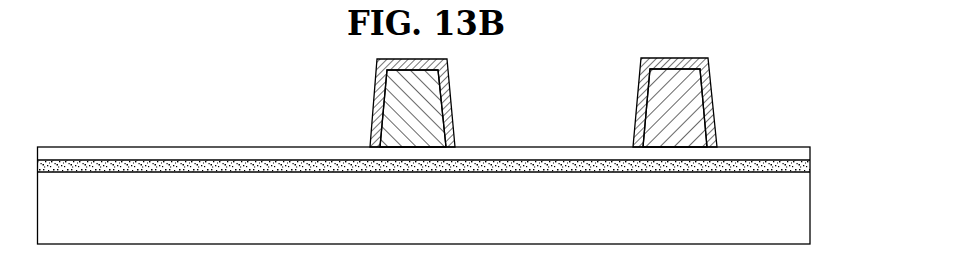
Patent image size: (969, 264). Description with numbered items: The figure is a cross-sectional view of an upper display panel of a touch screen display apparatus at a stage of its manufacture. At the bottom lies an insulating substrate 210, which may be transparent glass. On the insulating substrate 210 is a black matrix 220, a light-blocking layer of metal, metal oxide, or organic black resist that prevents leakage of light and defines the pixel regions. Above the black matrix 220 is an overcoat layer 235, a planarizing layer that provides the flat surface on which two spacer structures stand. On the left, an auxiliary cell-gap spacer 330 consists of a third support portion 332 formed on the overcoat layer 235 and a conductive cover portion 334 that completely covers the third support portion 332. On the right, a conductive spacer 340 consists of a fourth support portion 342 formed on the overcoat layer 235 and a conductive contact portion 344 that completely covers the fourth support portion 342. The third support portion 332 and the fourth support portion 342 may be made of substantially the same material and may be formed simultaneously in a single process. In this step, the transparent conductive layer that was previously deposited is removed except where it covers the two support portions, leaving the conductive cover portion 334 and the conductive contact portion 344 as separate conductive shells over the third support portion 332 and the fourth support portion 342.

The insulating substrate 210 is at (798, 208).
The black matrix 220 is at (797, 166).
The overcoat layer 235 is at (797, 151).
The auxiliary cell-gap spacer 330 is at (373, 103).
The third support portion 332 is at (395, 87).
The conductive cover portion 334 is at (376, 113).
The conductive spacer 340 is at (716, 102).
The fourth support portion 342 is at (693, 89).
The conductive contact portion 344 is at (713, 113).